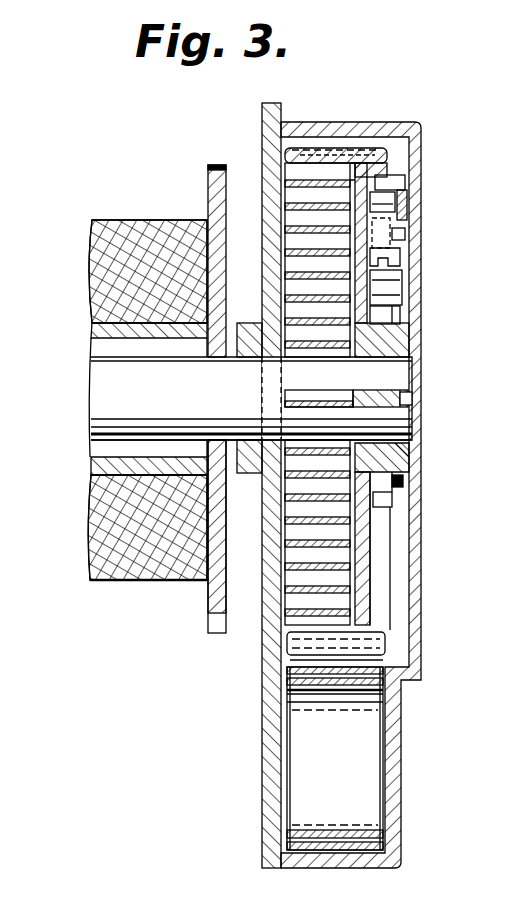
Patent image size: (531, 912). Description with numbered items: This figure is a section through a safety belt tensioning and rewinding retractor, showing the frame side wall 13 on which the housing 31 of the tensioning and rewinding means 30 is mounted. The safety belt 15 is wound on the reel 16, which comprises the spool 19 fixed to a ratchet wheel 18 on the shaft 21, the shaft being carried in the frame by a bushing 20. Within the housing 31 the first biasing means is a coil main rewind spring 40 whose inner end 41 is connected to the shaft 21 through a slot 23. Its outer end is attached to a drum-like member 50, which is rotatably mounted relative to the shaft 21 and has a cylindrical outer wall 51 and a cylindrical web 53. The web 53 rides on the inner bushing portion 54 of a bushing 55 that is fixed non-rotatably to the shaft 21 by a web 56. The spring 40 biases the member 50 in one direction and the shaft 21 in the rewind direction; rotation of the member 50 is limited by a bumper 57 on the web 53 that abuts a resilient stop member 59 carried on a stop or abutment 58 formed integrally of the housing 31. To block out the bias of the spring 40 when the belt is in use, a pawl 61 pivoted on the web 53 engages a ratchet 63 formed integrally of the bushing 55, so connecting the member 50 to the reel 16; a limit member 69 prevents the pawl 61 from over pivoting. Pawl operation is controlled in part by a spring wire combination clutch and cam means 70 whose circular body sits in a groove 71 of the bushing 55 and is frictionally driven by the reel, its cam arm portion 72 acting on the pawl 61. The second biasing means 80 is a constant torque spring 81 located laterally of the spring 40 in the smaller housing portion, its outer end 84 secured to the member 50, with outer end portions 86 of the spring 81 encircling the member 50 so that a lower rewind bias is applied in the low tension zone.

The side wall 13 is at (270, 116).
The safety belt 15 is at (112, 222).
The reel 16 is at (201, 209).
The ratchet wheel 18 is at (216, 594).
The spool 19 is at (106, 330).
The bushing 20 is at (246, 341).
The shaft 21 is at (106, 389).
The slot 23 is at (284, 398).
The safety belt tensioning and rewinding means 30 is at (436, 116).
The housing 31 is at (426, 147).
The main rewind spring 40 is at (303, 601).
The inner end 41 is at (343, 390).
The member 50 is at (360, 150).
The cylindrical outer wall 51 is at (301, 152).
The cylindrical web 53 is at (358, 581).
The inner bushing portion 54 is at (363, 357).
The bushing 55 is at (398, 458).
The web 56 is at (399, 400).
The bumper 57 is at (388, 191).
The stop or abutment 58 is at (396, 183).
The resilient stop member 59 is at (405, 204).
The pawl 61 is at (379, 265).
The ratchet 63 is at (386, 501).
The limit member 69 is at (394, 291).
The spring wire combination clutch and cam means 70 is at (400, 319).
The groove 71 is at (404, 483).
The cam arm portion 72 is at (397, 250).
The second biasing means 80 is at (420, 766).
The constant torque spring 81 is at (312, 829).
The outer end 84 is at (303, 644).
The outer end portions 86 is at (330, 150).